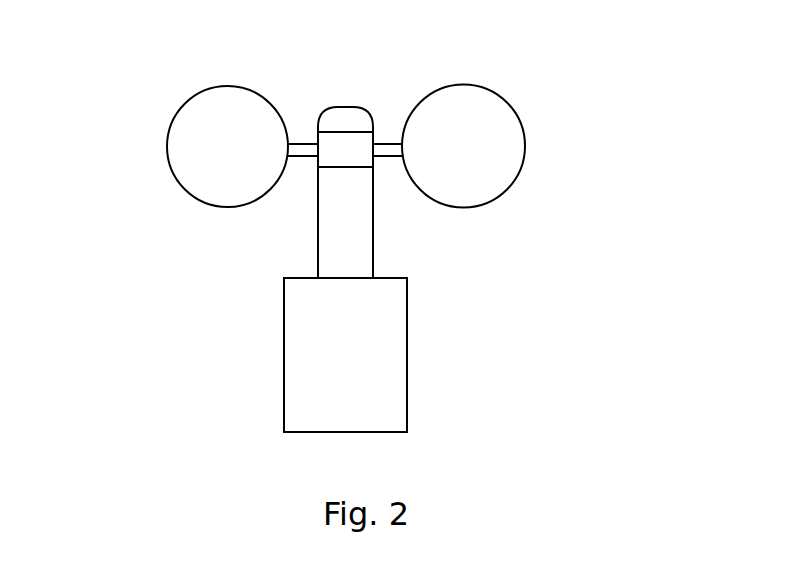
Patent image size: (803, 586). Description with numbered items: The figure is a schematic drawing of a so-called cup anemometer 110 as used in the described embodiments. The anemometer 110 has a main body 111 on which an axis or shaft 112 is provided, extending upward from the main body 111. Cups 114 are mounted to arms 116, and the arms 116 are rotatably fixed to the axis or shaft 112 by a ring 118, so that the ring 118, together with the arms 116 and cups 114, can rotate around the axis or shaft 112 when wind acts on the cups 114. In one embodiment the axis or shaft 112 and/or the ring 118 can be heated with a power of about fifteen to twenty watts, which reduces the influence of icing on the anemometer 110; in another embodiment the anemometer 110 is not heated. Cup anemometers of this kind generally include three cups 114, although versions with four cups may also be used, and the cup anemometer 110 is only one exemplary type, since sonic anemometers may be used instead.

The anemometer 110 is at (580, 124).
The main body 111 is at (405, 365).
The axis or shaft 112 is at (373, 227).
The cups 114 is at (166, 148).
The arms 116 is at (303, 140).
The ring 118 is at (379, 132).